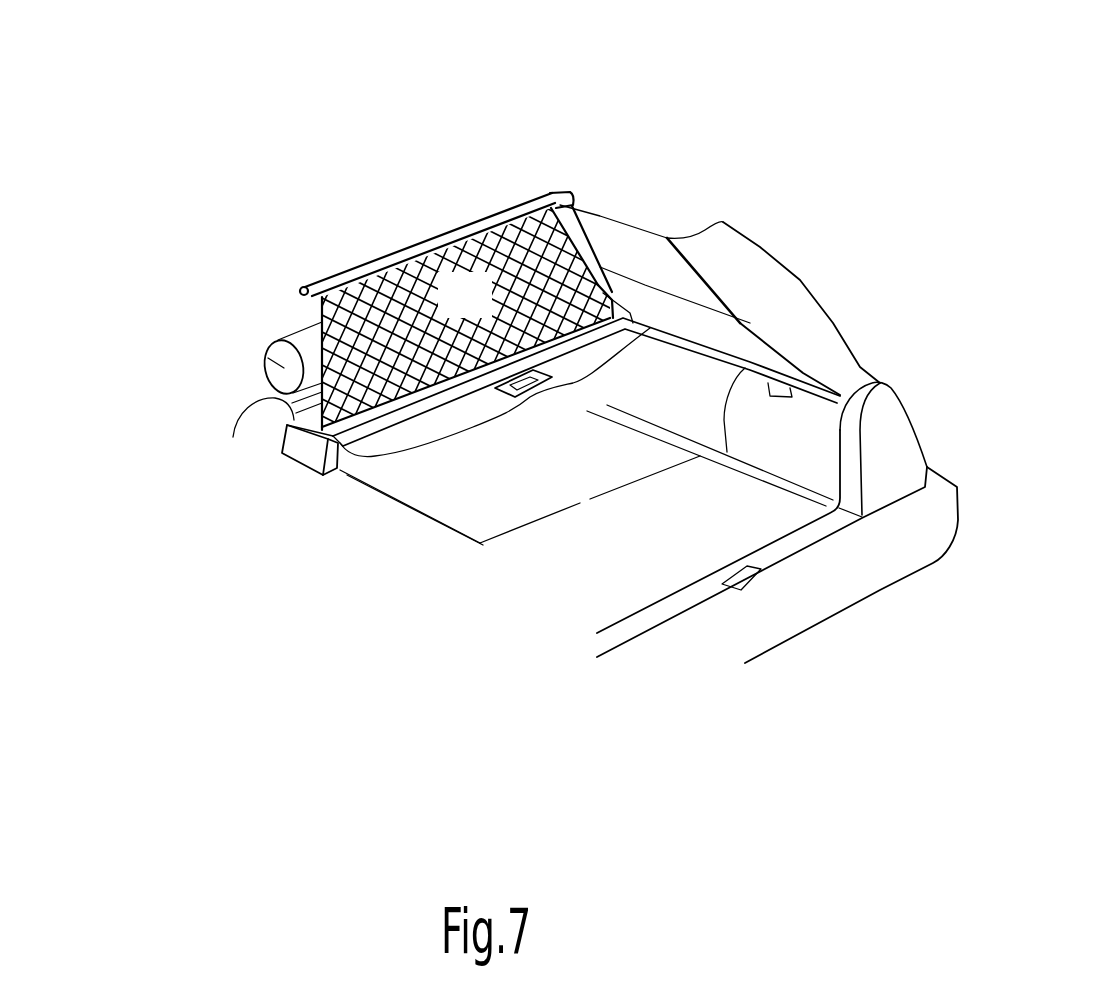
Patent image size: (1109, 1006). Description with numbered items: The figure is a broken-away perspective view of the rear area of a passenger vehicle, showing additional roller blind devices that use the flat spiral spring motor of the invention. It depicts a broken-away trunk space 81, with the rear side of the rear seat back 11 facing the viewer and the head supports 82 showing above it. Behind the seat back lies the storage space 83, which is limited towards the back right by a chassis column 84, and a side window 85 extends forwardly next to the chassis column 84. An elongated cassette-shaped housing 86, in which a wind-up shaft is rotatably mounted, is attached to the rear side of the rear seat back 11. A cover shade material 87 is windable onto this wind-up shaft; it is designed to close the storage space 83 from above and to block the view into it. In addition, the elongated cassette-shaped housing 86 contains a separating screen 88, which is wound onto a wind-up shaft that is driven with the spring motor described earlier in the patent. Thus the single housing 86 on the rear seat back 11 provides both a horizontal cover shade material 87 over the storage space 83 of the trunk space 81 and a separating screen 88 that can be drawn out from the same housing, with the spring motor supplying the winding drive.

The rear seat back 11 is at (262, 398).
The trunk space 81 is at (350, 632).
The head supports 82 is at (265, 352).
The storage space 83 is at (697, 590).
The chassis column 84 is at (767, 293).
The side window 85 is at (628, 243).
The elongated cassette-shaped housing 86 is at (303, 483).
The cover shade material 87 is at (403, 435).
The separating screen 88 is at (484, 312).